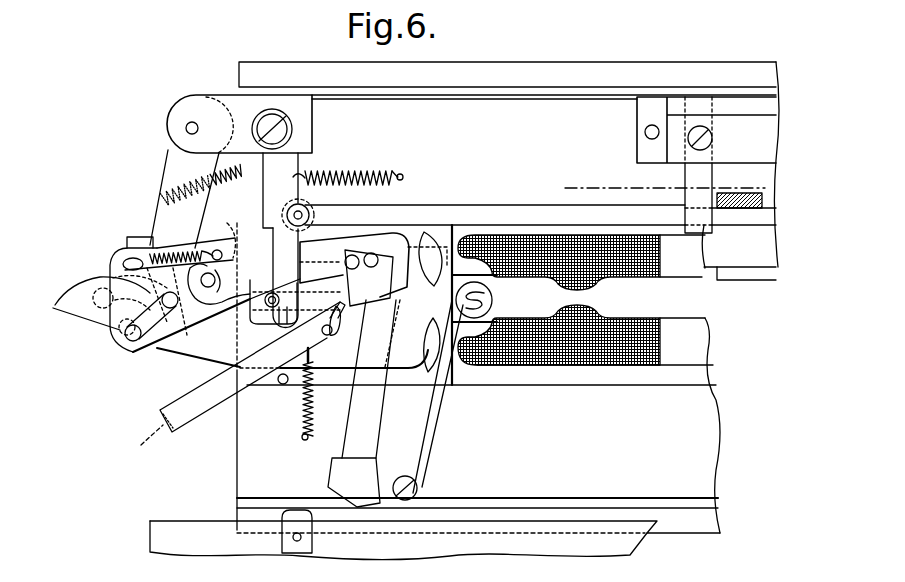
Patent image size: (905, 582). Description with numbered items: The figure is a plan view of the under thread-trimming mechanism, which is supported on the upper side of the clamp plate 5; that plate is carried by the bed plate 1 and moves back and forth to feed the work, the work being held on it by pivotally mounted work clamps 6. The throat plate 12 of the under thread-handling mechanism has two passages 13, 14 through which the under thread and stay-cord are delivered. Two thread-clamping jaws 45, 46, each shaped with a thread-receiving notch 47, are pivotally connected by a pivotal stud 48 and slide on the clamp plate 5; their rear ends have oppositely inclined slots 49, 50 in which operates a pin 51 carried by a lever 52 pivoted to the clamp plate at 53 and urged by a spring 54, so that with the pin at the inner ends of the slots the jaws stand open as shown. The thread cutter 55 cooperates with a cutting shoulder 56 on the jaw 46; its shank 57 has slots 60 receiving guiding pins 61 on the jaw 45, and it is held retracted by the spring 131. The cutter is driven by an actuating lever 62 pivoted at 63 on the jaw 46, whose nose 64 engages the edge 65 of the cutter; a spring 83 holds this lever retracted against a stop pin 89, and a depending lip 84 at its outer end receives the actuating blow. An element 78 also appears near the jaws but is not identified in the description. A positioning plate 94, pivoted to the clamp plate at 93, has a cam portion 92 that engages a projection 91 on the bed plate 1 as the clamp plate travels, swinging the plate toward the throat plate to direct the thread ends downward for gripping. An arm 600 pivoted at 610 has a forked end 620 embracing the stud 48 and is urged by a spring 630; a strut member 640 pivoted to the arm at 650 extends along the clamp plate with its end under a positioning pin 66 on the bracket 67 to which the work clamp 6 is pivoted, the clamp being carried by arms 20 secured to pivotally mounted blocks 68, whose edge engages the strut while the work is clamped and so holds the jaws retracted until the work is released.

The bed plate 1 is at (178, 486).
The clamp plate 5 is at (706, 440).
The work clamps 6 is at (659, 190).
The throat plate 12 is at (581, 300).
The passage 13 is at (457, 304).
The passage 14 is at (484, 297).
The arms 20 is at (696, 268).
The thread-clamping jaw 45 is at (408, 228).
The thread-clamping jaw 46 is at (378, 360).
The thread-receiving notch 47 is at (430, 238).
The pivotal stud 48 is at (272, 315).
The inclined slot 49 is at (133, 337).
The inclined slot 50 is at (137, 246).
The pin 51 is at (172, 306).
The lever 52 is at (166, 167).
The pivot of lever 53 is at (193, 122).
The spring 54 is at (222, 176).
The thread cutter 55 is at (408, 236).
The cutting shoulder 56 is at (394, 320).
The shank or body portion 57 is at (341, 278).
The slots 60 is at (353, 270).
The guiding pins 61 is at (372, 268).
The actuating lever 62 is at (220, 402).
The pivot of actuating lever 63 is at (331, 334).
The nose 64 is at (332, 307).
The edge of cutter 65 is at (336, 314).
The positioning pin 66 is at (696, 179).
The bracket 67 is at (655, 140).
The pivotally-mounted blocks 68 is at (741, 281).
The hammer spur 78 is at (100, 318).
The spring 83 is at (310, 402).
The depending lip 84 is at (145, 441).
The stop pin 89 is at (283, 384).
The projection 91 is at (297, 515).
The cam portion 92 is at (357, 497).
The pivot of positioning plate 93 is at (418, 482).
The positioning plate 94 is at (428, 420).
The spring 131 is at (180, 252).
The lever or arm 600 is at (283, 189).
The pivot of arm 610 is at (272, 118).
The forked end 620 is at (252, 330).
The spring 630 is at (356, 173).
The strut member 640 is at (481, 216).
The pivot of strut 650 is at (289, 212).